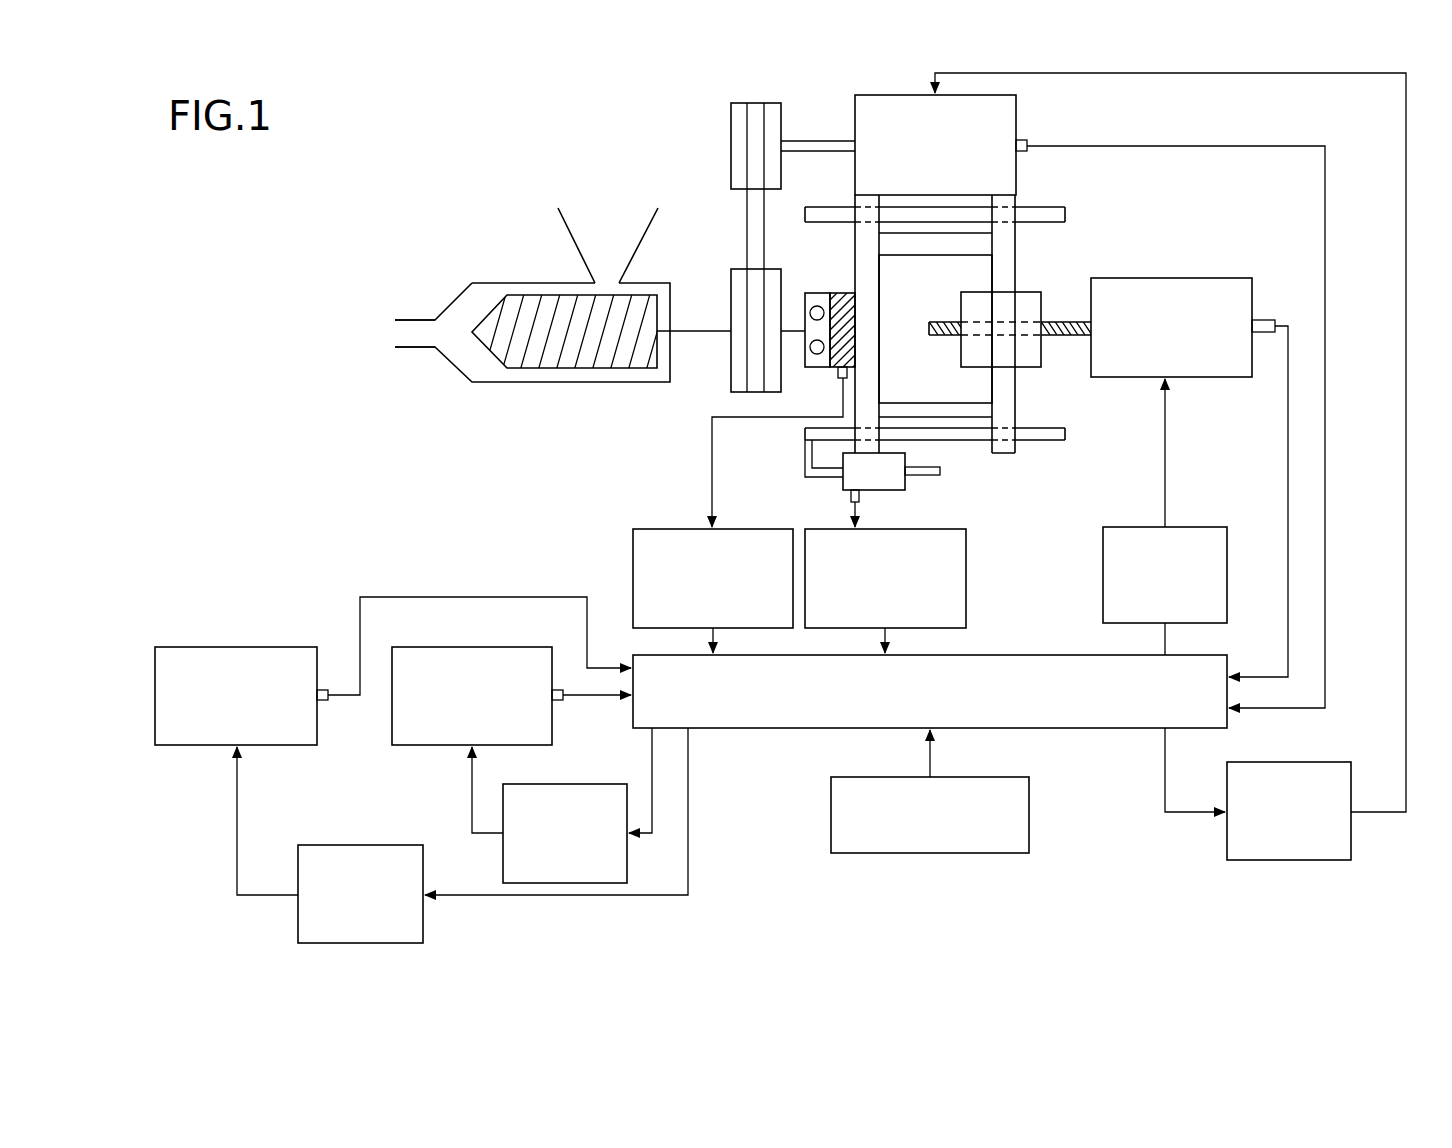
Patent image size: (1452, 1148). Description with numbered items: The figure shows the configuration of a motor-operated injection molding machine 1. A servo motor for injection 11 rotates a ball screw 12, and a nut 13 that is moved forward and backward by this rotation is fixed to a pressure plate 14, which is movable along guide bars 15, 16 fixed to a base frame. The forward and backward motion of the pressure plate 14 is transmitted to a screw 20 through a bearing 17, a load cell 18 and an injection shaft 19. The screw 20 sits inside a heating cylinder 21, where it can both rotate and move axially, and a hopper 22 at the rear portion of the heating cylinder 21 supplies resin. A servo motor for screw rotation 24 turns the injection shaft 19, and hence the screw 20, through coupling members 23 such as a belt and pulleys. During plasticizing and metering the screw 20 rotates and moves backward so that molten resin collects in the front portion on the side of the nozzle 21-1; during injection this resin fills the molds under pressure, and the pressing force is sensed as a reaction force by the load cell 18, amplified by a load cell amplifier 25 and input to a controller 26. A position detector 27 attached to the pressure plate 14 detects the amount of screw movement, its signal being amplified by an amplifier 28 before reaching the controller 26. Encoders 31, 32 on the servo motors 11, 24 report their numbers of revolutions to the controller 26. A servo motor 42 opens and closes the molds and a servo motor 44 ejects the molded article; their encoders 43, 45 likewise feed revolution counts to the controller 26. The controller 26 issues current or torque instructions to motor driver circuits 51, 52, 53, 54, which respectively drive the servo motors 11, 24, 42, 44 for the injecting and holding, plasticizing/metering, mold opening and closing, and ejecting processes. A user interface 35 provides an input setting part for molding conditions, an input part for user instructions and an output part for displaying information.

The injection molding machine 1 is at (392, 133).
The servo motor for injection 11 is at (1173, 278).
The ball screw 12 is at (1063, 322).
The nut 13 is at (1025, 292).
The pressure plate 14 is at (1010, 392).
The guide bar 15 is at (1067, 212).
The guide bar 16 is at (1067, 432).
The bearing 17 is at (817, 292).
The load cell 18 is at (845, 292).
The injection shaft 19 is at (697, 334).
The screw 20 is at (498, 293).
The heating cylinder 21 is at (447, 308).
The nozzle 21-1 is at (418, 350).
The hopper 22 is at (567, 236).
The coupling members 23 is at (745, 230).
The servo motor for screw rotation 24 is at (1016, 112).
The load cell amplifier 25 is at (632, 578).
The controller 26 is at (747, 731).
The position detector 27 is at (905, 482).
The amplifier 28 is at (967, 578).
The encoder 31 is at (1258, 318).
The encoder 32 is at (1022, 152).
The user interface 35 is at (967, 853).
The servo motor 42 is at (237, 645).
The encoder 43 is at (322, 702).
The servo motor 44 is at (473, 642).
The encoder 45 is at (558, 702).
The motor driver circuit 51 is at (1213, 525).
The motor driver circuit 52 is at (1343, 762).
The motor driver circuit 53 is at (373, 843).
The motor driver circuit 54 is at (583, 780).